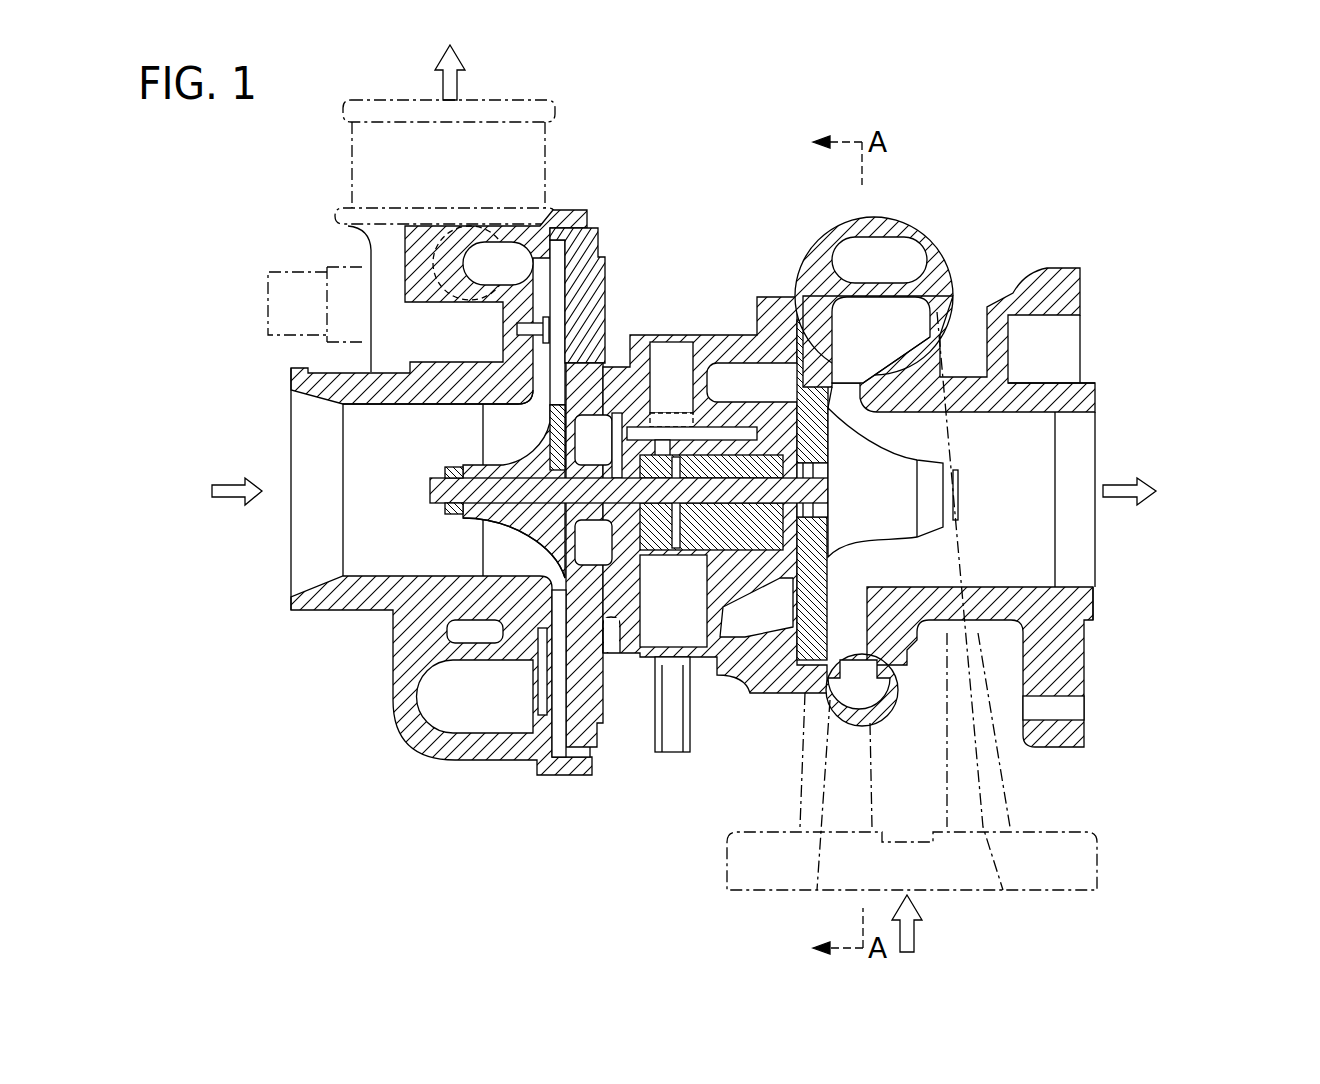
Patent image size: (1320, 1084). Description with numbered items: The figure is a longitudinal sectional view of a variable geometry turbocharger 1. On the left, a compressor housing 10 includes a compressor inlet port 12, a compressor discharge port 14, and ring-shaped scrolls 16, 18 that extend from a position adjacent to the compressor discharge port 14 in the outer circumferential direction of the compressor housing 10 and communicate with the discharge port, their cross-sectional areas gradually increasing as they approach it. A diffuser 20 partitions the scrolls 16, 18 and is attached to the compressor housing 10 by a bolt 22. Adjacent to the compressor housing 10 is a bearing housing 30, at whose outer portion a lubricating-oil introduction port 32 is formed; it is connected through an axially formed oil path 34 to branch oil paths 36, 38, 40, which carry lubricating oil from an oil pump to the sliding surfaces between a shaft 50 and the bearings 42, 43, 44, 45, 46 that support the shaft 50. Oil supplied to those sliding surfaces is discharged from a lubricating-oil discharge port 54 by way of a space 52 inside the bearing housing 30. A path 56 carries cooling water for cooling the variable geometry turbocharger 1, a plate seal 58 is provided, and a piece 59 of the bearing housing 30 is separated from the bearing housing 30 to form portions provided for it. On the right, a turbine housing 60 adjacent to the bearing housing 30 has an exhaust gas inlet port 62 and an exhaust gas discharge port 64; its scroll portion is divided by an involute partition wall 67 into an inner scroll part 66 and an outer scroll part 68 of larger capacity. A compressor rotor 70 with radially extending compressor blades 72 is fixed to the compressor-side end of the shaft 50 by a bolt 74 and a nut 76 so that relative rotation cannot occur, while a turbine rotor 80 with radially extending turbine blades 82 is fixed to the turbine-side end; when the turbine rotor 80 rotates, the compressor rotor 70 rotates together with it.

The variable geometry turbocharger 1 is at (1173, 198).
The compressor housing 10 is at (377, 638).
The compressor inlet port 12 is at (297, 610).
The compressor discharge port 14 is at (550, 108).
The scroll 16 is at (493, 265).
The scroll 18 is at (460, 723).
The diffuser 20 is at (549, 322).
The bolt 22 is at (598, 356).
The bearing housing 30 is at (725, 678).
The lubricating-oil introduction port 32 is at (678, 347).
The oil path 34 is at (707, 433).
The branch oil path 36 is at (620, 423).
The branch oil path 38 is at (665, 433).
The branch oil path 40 is at (750, 432).
The bearing 42 is at (613, 548).
The bearing 43 is at (638, 548).
The bearing 44 is at (672, 552).
The bearing 45 is at (710, 535).
The bearing 46 is at (760, 547).
The shaft 50 is at (533, 505).
The space 52 is at (645, 662).
The lubricating-oil discharge port 54 is at (672, 752).
The path for cooling water 56 is at (783, 373).
The plate seal 58 is at (548, 432).
The piece of the bearing housing 59 is at (837, 417).
The turbine housing 60 is at (940, 215).
The exhaust gas inlet port 62 is at (1085, 853).
The exhaust gas discharge port 64 is at (1090, 392).
The inner scroll part 66 is at (893, 320).
The involute partition wall 67 is at (903, 267).
The outer scroll part 68 is at (887, 250).
The compressor rotor 70 is at (497, 520).
The compressor blades 72 is at (493, 542).
The bolt 74 is at (430, 507).
The nut 76 is at (443, 470).
The turbine rotor 80 is at (923, 510).
The turbine blades 82 is at (903, 562).